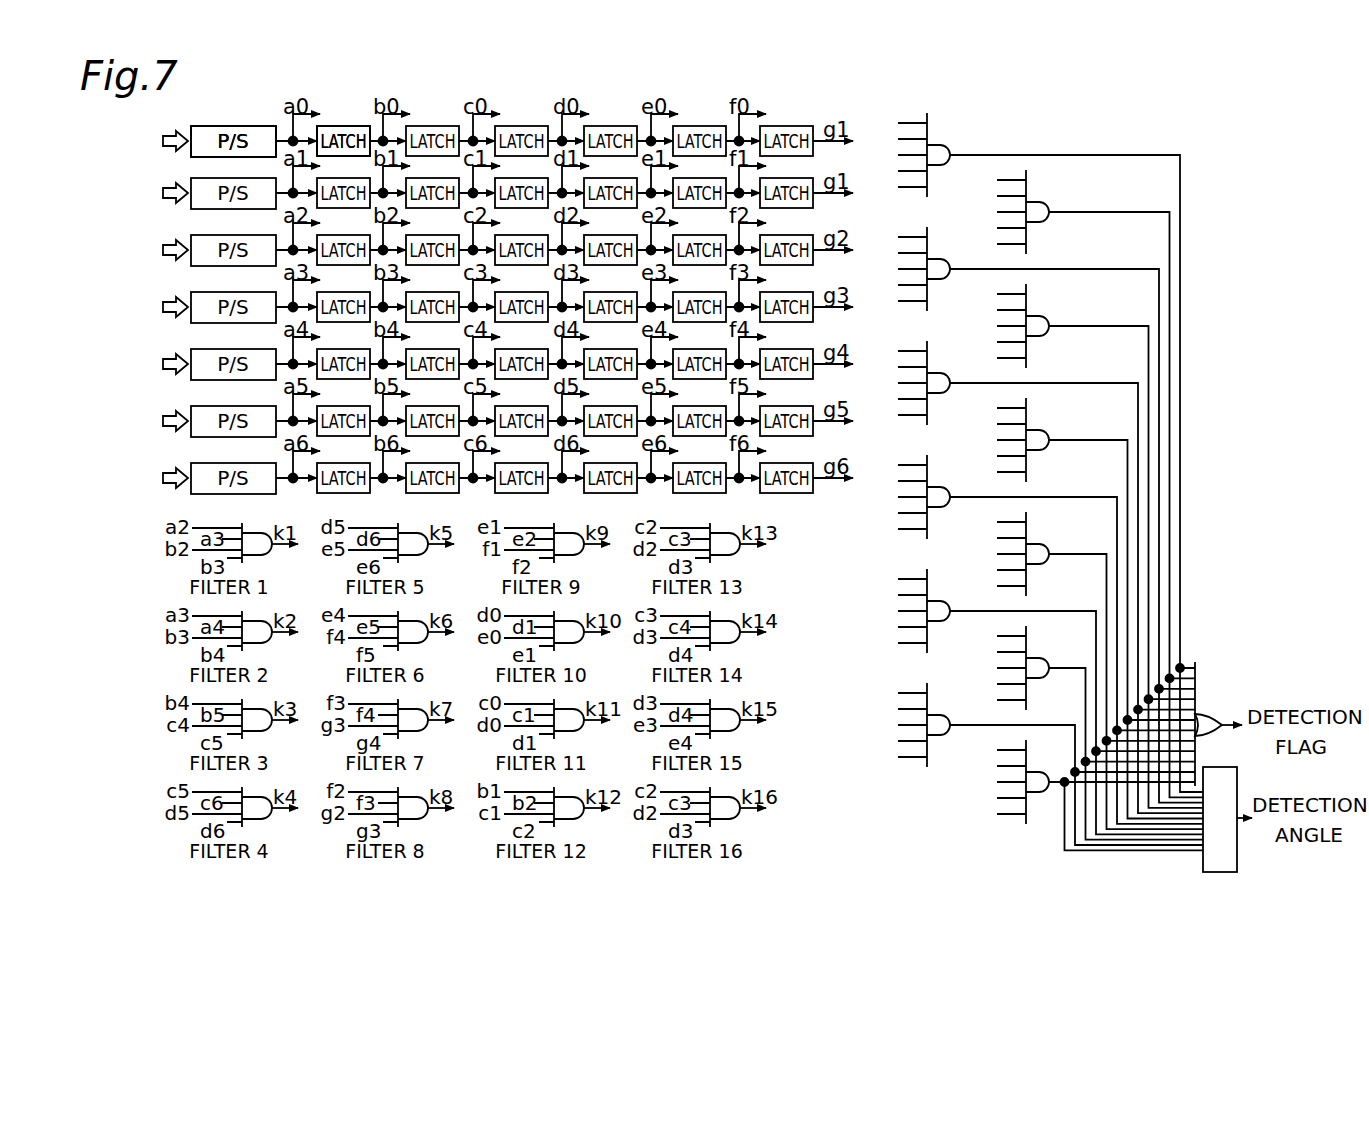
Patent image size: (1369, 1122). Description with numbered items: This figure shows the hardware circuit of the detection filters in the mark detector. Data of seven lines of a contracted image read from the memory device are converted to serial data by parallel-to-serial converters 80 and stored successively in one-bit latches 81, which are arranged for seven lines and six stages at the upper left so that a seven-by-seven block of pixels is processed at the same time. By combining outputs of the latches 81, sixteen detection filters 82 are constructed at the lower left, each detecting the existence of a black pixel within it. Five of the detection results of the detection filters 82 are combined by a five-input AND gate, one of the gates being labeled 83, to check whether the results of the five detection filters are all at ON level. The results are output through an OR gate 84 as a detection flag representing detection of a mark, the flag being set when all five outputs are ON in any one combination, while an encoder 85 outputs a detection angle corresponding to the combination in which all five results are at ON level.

The parallel-to-serial converter 80 is at (215, 126).
The 1-bit latch 81 is at (323, 127).
The detection filter 82 is at (261, 518).
The AND gate array 83 is at (862, 628).
The OR gate 84 is at (1197, 713).
The encoder 85 is at (1207, 767).